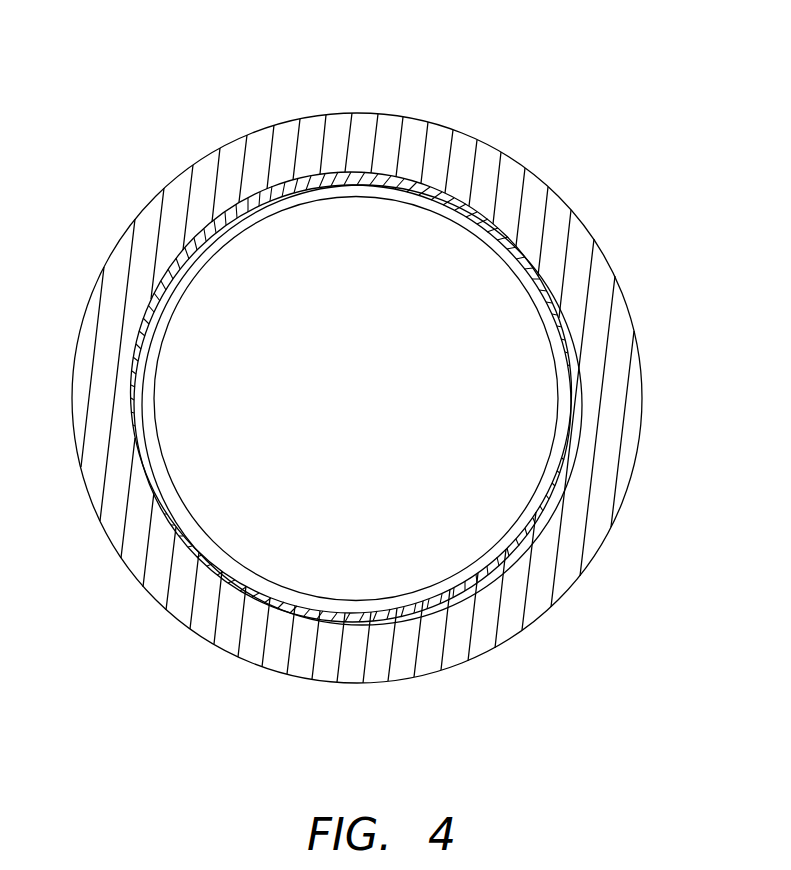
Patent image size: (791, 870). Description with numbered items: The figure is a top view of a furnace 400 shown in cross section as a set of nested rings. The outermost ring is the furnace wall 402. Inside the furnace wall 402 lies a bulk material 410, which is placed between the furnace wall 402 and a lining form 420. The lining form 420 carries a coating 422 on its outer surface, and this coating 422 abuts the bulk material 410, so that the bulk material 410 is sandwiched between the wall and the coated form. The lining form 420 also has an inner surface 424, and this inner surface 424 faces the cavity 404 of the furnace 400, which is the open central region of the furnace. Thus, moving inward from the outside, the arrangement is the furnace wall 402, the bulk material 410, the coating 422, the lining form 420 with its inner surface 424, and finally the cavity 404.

The furnace 400 is at (118, 58).
The furnace wall 402 is at (517, 163).
The cavity 404 is at (473, 466).
The bulk material 410 is at (578, 235).
The lining form 420 is at (560, 362).
The coating 422 is at (560, 293).
The inner surface 424 is at (557, 438).